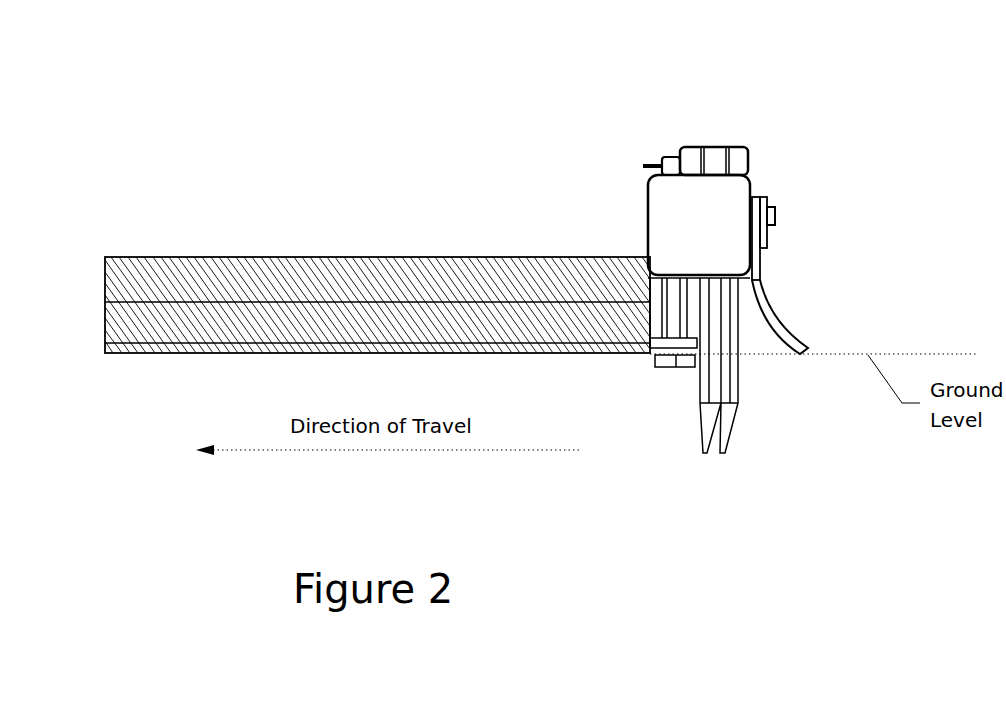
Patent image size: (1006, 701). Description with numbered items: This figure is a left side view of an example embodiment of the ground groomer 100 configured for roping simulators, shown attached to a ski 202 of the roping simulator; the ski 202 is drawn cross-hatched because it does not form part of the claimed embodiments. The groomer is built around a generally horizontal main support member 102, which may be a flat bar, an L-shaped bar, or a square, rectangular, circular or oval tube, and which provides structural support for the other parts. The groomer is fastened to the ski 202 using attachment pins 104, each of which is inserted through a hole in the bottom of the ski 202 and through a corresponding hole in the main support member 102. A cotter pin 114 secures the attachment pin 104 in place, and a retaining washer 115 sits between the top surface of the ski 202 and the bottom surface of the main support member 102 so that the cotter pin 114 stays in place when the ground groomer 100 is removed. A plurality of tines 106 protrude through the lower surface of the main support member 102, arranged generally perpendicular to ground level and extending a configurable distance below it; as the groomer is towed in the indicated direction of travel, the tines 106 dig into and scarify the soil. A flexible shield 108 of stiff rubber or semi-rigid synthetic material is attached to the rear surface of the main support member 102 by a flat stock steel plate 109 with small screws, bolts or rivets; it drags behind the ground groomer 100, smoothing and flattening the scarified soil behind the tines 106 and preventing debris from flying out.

The ground groomer 100 is at (398, 82).
The main support member 102 is at (658, 220).
The attachment pins 104 is at (668, 158).
The tines 106 is at (748, 148).
The flexible shield 108 is at (790, 323).
The flat stock steel plate 109 is at (772, 233).
The cotter pin 114 is at (643, 167).
The retaining washer 115 is at (647, 355).
The skis 202 is at (447, 257).